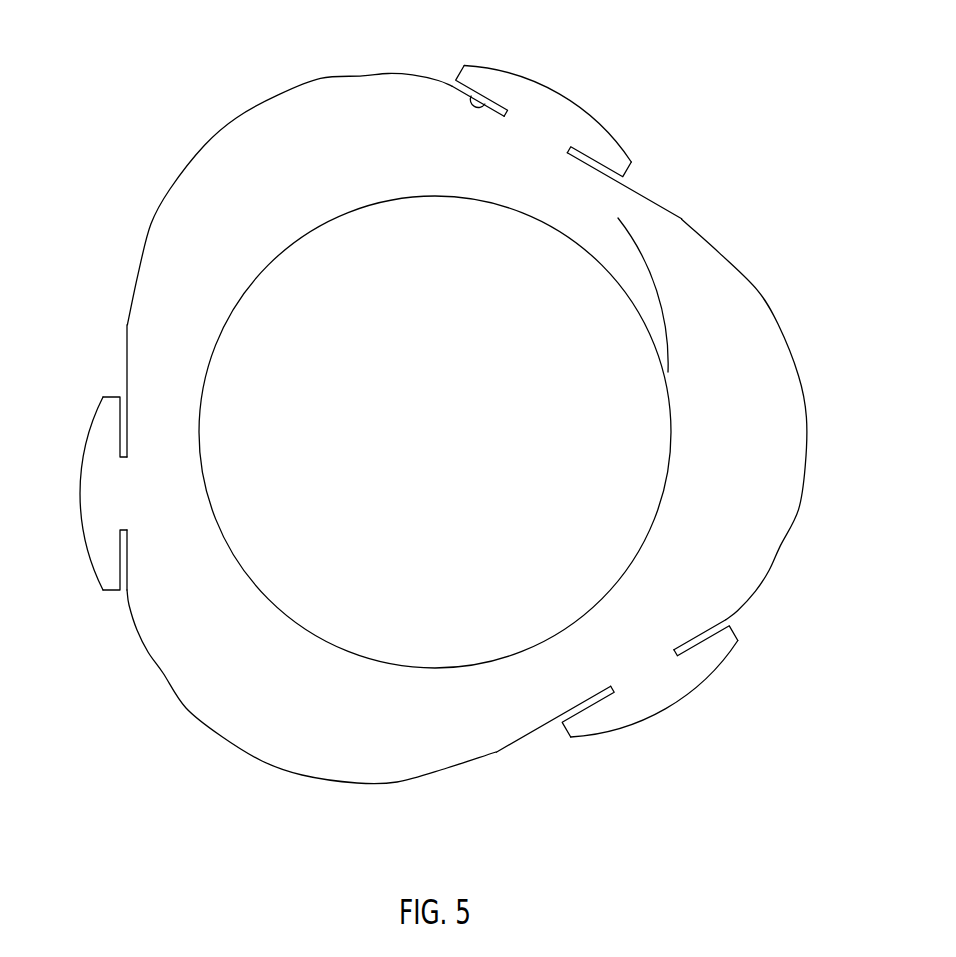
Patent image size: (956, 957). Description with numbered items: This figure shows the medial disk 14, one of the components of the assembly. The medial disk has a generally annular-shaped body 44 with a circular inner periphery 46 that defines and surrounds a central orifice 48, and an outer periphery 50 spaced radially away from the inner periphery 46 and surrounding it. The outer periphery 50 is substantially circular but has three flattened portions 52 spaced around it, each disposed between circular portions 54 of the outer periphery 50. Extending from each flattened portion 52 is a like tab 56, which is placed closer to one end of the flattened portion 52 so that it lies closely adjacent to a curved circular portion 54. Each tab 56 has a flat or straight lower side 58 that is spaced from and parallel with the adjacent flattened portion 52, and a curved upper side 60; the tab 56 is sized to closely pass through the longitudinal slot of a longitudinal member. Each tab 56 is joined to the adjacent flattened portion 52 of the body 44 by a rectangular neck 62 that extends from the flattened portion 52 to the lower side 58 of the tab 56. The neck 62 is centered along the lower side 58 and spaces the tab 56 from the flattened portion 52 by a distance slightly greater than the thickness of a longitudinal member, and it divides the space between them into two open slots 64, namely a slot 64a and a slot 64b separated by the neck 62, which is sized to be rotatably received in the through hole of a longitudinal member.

The medial disk 14 is at (163, 194).
The body 44 is at (257, 167).
The inner periphery 46 is at (290, 245).
The central orifice 48 is at (605, 331).
The outer periphery 50 is at (779, 324).
The flattened portion 52 is at (125, 356).
The circular portion 54 is at (301, 79).
The tab 56 is at (414, 375).
The lower side 58 is at (478, 97).
The upper side 60 is at (525, 76).
The neck 62 is at (125, 493).
The open slots 64 is at (124, 592).
The slot 64a is at (458, 86).
The slot 64b is at (621, 181).